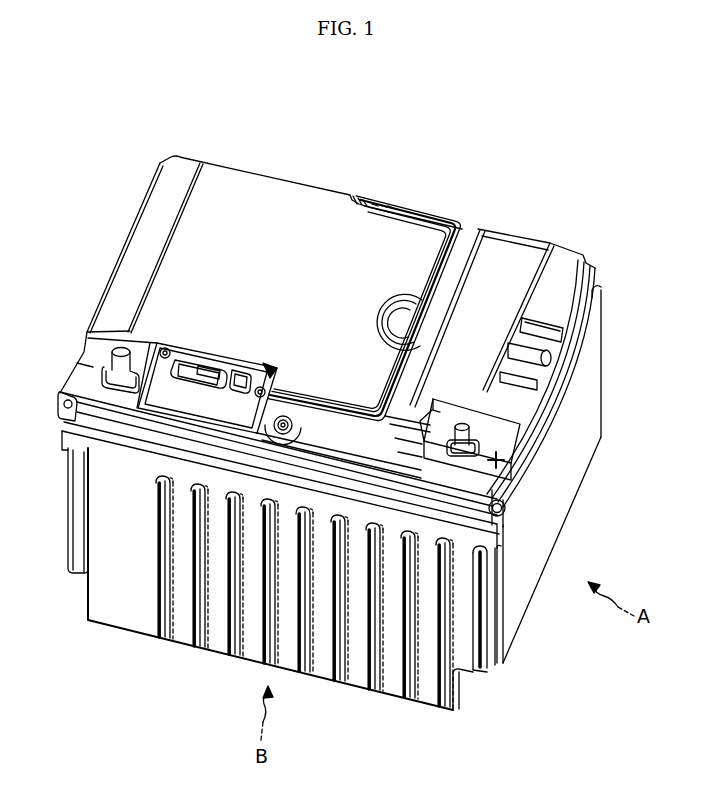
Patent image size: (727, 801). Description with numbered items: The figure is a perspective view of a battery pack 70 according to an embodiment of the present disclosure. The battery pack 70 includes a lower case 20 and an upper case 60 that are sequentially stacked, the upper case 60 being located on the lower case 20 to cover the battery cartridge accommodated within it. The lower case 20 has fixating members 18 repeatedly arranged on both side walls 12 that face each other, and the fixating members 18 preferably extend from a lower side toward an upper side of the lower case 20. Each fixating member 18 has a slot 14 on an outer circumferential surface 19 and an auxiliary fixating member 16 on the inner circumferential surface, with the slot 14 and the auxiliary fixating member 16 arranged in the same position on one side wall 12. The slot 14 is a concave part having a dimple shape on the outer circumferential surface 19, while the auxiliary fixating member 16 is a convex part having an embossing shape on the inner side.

The battery pack 70 is at (174, 111).
The upper case 60 is at (425, 233).
The lower case 20 is at (594, 424).
The side wall 12 is at (115, 613).
The outer circumferential surface 19 is at (97, 582).
The slot 14 is at (158, 636).
The auxiliary fixating member 16 is at (452, 697).
The fixating member 18 is at (319, 623).